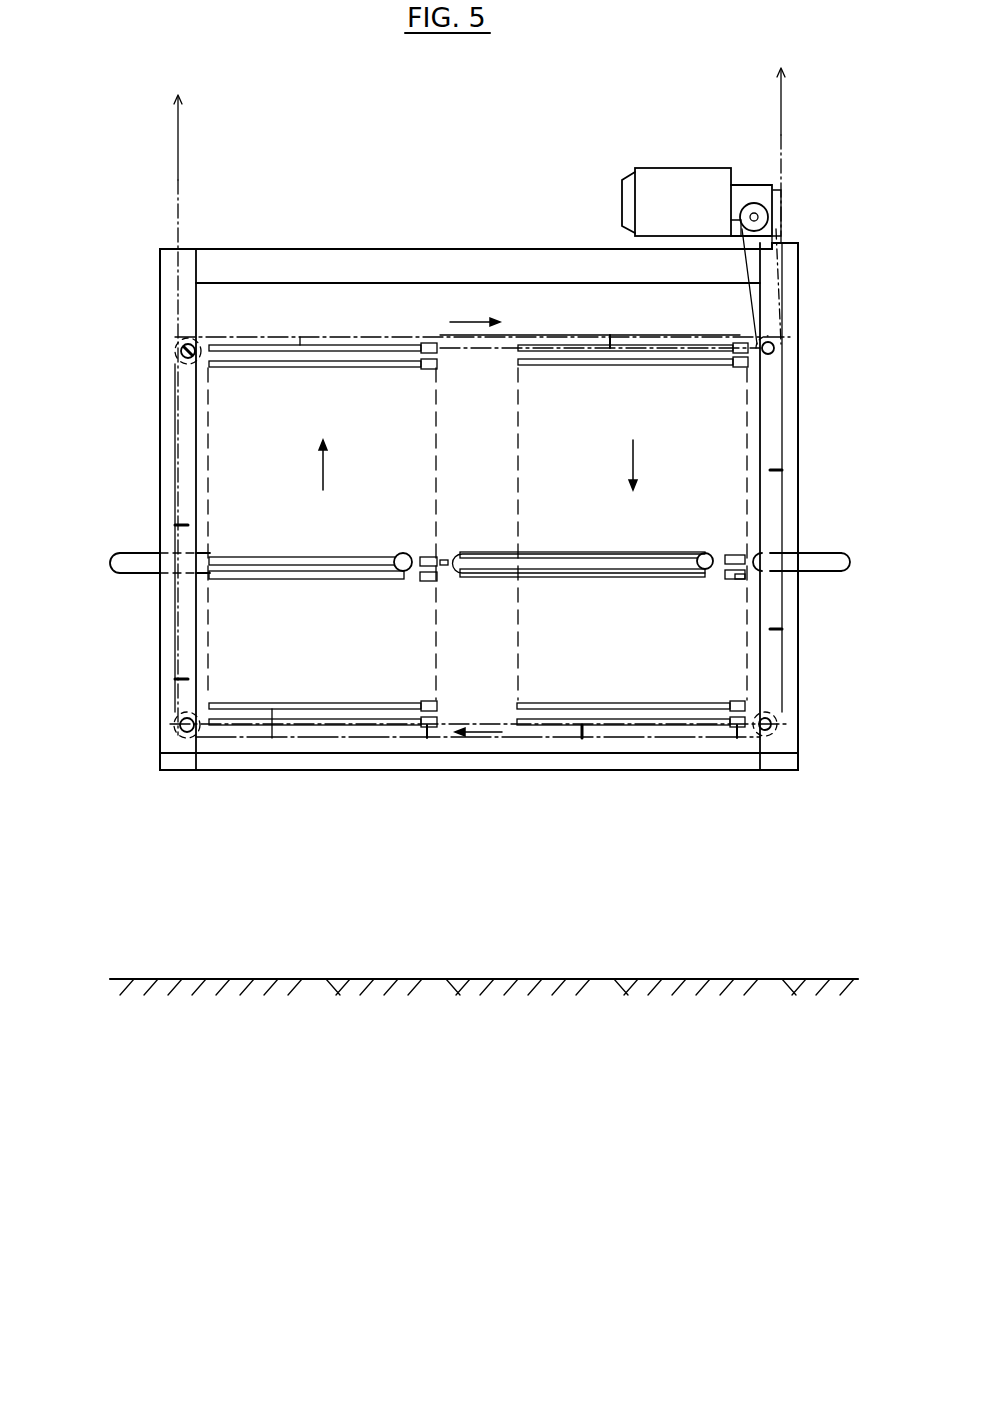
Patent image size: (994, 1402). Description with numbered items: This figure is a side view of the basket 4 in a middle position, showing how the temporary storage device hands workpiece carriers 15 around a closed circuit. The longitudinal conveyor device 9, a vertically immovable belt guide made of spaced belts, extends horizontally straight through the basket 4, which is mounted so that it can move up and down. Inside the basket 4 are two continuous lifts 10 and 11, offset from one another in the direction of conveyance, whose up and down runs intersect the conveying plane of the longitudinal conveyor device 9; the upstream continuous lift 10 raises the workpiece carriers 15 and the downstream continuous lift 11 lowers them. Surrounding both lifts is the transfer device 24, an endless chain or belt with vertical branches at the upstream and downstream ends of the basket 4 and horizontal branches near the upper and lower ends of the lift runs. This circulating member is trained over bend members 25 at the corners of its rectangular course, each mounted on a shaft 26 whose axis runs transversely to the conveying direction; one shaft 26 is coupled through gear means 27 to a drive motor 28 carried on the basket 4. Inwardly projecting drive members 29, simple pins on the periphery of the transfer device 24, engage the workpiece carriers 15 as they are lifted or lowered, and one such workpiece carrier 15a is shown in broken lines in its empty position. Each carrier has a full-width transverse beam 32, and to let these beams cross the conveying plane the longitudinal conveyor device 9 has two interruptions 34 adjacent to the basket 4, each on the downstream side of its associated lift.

The basket 4 is at (157, 346).
The longitudinal conveyor device 9 is at (128, 550).
The continuous lift 10 is at (207, 648).
The continuous lift 11 is at (750, 519).
The workpiece carrier 15 is at (615, 366).
The workpiece carrier 15a is at (545, 348).
The transfer device 24 is at (174, 668).
The bend member 25 is at (780, 358).
The shaft 26 is at (777, 342).
The gear means 27 is at (778, 292).
The drive motor 28 is at (680, 185).
The drive member 29 is at (582, 738).
The transverse beam 32 is at (425, 560).
The interruption 34 is at (446, 563).